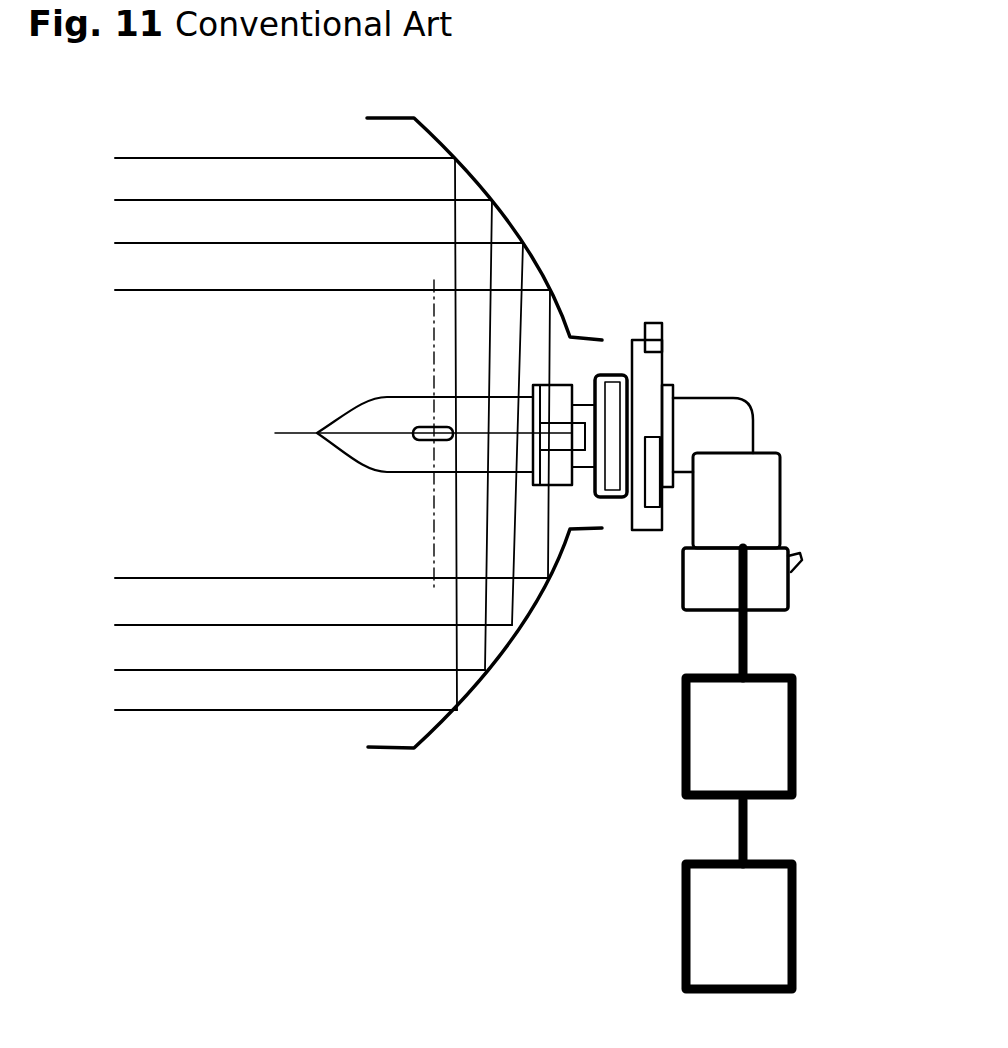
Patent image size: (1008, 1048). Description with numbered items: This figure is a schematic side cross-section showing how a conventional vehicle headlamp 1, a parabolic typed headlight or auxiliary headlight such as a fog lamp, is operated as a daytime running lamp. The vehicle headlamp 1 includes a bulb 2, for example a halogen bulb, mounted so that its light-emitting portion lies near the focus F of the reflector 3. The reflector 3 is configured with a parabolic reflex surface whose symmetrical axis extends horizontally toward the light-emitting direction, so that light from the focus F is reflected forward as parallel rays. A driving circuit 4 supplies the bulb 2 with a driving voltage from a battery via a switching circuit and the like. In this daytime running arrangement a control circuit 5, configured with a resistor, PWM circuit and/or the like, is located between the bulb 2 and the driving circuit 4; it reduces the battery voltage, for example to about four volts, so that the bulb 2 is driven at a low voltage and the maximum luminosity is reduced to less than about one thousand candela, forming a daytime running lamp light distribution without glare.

The vehicle headlamp 1 is at (770, 247).
The bulb 2 is at (355, 450).
The reflector 3 is at (512, 225).
The driving circuit 4 is at (797, 922).
The control circuit 5 is at (797, 730).
The focus F is at (430, 442).